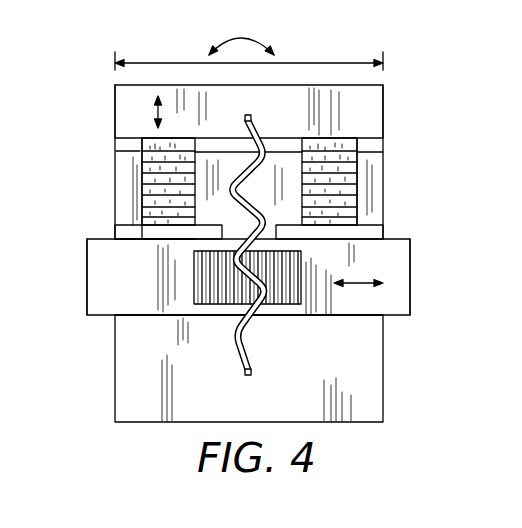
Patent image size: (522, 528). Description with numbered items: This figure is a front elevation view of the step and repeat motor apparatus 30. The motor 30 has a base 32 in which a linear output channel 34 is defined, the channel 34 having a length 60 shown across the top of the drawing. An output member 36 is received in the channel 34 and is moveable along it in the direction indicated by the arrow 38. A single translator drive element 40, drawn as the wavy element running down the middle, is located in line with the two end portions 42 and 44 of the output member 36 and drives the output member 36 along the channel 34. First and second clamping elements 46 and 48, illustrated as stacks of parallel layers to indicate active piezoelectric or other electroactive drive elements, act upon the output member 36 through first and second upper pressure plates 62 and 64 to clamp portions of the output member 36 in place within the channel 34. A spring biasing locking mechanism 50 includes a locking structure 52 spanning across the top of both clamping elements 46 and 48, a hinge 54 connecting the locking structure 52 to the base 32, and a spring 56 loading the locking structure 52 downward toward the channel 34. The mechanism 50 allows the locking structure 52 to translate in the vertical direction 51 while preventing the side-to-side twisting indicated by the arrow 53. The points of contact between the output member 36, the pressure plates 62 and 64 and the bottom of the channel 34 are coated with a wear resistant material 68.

The step and repeat motor apparatus 30 is at (431, 100).
The base 32 is at (371, 380).
The linear output channel 34 is at (368, 309).
The output member 36 is at (259, 263).
The arrow indicating direction of movement 38 is at (355, 280).
The translator drive element 40 is at (284, 302).
The first end portion of output member 42 is at (105, 253).
The second end portion of output member 44 is at (403, 294).
The first clamping element 46 is at (147, 165).
The second clamping element 48 is at (352, 165).
The spring biasing locking mechanism 50 is at (295, 113).
The vertical direction 51 is at (153, 108).
The locking structure 52 is at (368, 93).
The arrow indicating rotational twisting 53 is at (246, 36).
The hinge 54 is at (370, 146).
The spring 56 is at (256, 130).
The length of channel 60 is at (317, 63).
The first upper pressure plate 62 is at (134, 232).
The second upper pressure plate 64 is at (373, 229).
The wear resistant material 68 is at (140, 314).